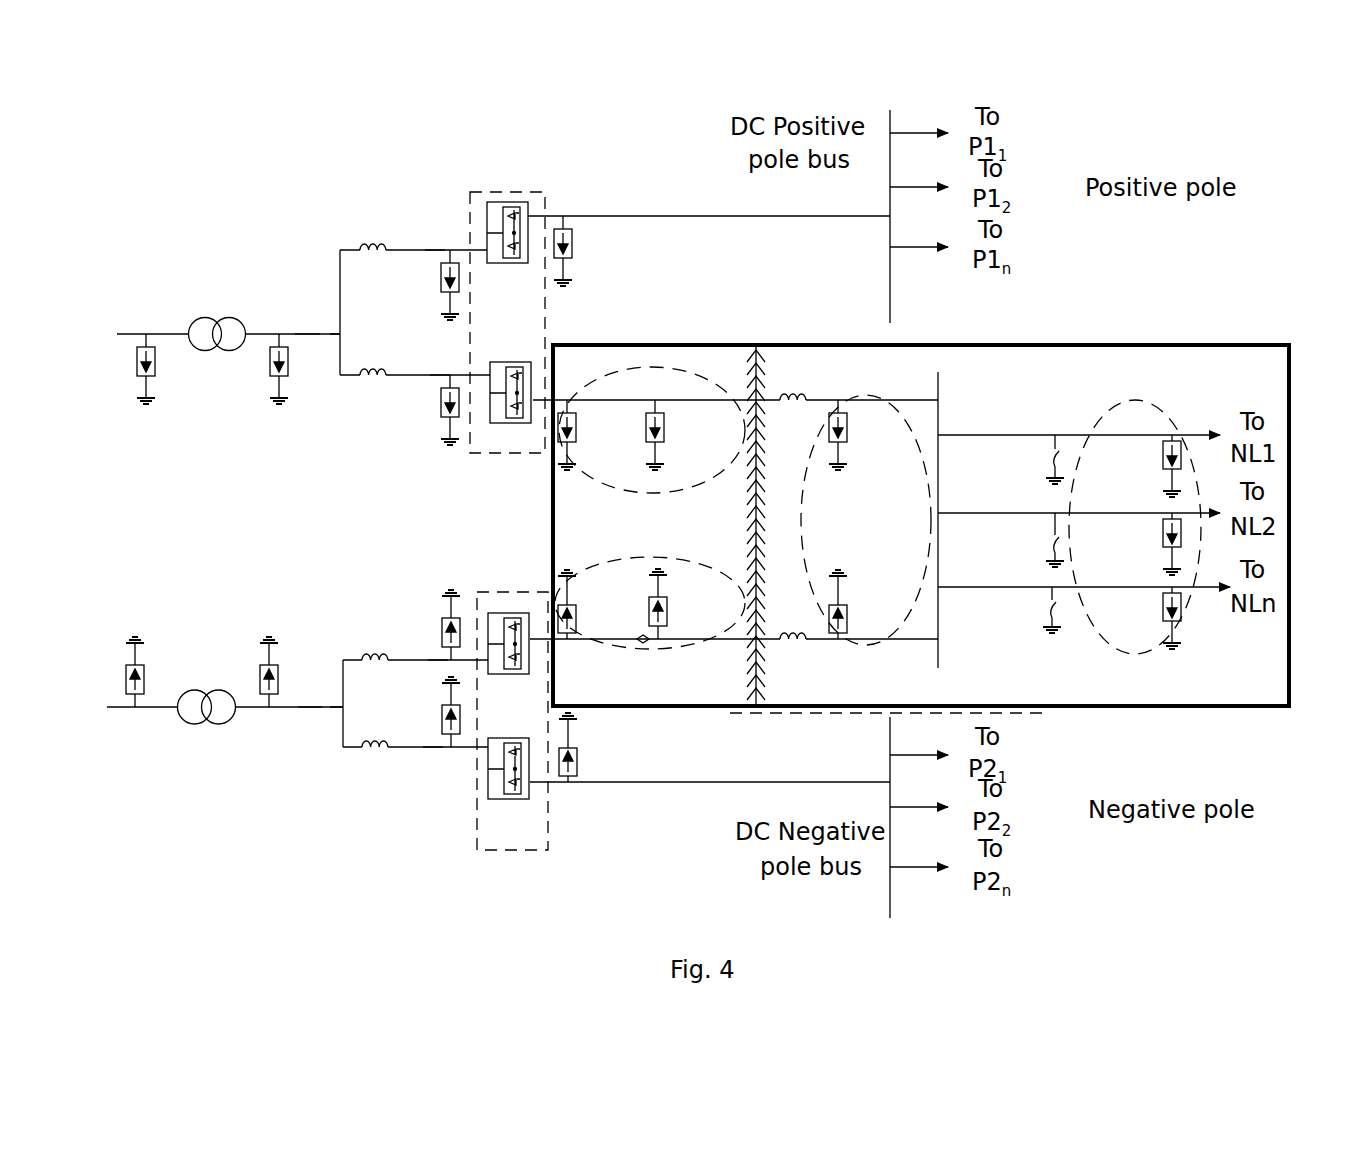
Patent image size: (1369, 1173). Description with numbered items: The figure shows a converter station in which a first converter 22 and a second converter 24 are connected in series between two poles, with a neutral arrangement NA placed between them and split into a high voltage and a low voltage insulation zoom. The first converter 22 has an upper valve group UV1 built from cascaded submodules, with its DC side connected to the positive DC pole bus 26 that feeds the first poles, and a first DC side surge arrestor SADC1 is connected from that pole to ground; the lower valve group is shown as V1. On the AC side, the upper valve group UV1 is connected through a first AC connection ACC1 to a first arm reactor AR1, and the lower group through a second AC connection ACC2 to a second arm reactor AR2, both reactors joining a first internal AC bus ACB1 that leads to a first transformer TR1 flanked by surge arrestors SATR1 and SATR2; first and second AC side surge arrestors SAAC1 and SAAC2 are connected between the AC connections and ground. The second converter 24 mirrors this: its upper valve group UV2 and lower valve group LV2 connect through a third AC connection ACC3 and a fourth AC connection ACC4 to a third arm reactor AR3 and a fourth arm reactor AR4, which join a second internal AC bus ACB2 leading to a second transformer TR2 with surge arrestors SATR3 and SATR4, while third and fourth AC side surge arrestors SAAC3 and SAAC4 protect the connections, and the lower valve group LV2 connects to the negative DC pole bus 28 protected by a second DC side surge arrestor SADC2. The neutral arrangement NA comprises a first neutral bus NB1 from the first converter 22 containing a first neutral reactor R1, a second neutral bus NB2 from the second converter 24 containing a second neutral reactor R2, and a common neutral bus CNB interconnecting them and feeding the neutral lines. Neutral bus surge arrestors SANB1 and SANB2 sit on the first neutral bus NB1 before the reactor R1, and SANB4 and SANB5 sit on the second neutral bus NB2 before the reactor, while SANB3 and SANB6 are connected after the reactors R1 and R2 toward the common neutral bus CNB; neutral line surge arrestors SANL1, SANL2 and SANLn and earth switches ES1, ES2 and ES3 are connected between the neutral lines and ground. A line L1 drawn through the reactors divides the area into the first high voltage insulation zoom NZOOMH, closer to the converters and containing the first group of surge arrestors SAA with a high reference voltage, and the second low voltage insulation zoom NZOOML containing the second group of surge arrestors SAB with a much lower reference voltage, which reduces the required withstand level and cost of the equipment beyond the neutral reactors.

The first converter 22 is at (467, 200).
The second converter 24 is at (477, 808).
The positive DC pole bus 26 is at (890, 125).
The negative DC pole bus 28 is at (890, 903).
The first transformer TR1 is at (228, 320).
The second transformer TR2 is at (225, 727).
The first internal AC bus ACB1 is at (307, 334).
The second internal AC bus ACB2 is at (310, 707).
The first AC connection ACC1 is at (435, 248).
The second AC connection ACC2 is at (440, 373).
The third AC connection ACC3 is at (438, 660).
The fourth AC connection ACC4 is at (433, 748).
The first arm reactor AR1 is at (413, 229).
The second arm reactor AR2 is at (415, 355).
The third arm reactor AR3 is at (415, 676).
The fourth arm reactor AR4 is at (413, 761).
The transformer surge arrestor SATR1 is at (105, 369).
The transformer surge arrestor SATR2 is at (242, 369).
The transformer surge arrestor SATR3 is at (93, 672).
The transformer surge arrestor SATR4 is at (235, 672).
The first AC side surge arrestor SAAC1 is at (415, 285).
The second AC side surge arrestor SAAC2 is at (415, 410).
The third AC side surge arrestor SAAC3 is at (416, 625).
The fourth AC side surge arrestor SAAC4 is at (416, 712).
The first DC side surge arrestor SADC1 is at (596, 251).
The second DC side surge arrestor SADC2 is at (604, 750).
The upper valve group UV1 is at (514, 245).
The converter V1 is at (509, 409).
The upper valve group UV2 is at (513, 666).
The lower valve group LV2 is at (510, 792).
The line L1 is at (753, 372).
The first neutral reactor R1 is at (796, 376).
The second neutral reactor R2 is at (796, 653).
The first neutral bus NB1 is at (867, 387).
The second neutral bus NB2 is at (745, 640).
The first neutral bus surge arrestor SANB1 is at (599, 435).
The second neutral bus surge arrestor SANB2 is at (688, 435).
The third neutral bus surge arrestor SANB3 is at (875, 435).
The fourth neutral bus surge arrestor SANB4 is at (599, 604).
The fifth neutral bus surge arrestor SANB5 is at (689, 604).
The sixth neutral bus surge arrestor SANB6 is at (870, 604).
The first group of surge arrestors SAA is at (596, 484).
The second group of surge arrestors SAB is at (810, 521).
The first high voltage insulation zoom NZOOMH is at (735, 544).
The second low voltage insulation zoom NZOOML is at (1150, 379).
The common neutral bus CNB is at (942, 412).
The first earth switch ES1 is at (1025, 459).
The second earth switch ES2 is at (1025, 540).
The earth switch ES3 is at (1024, 610).
The neutral line surge arrestor SANL1 is at (1133, 466).
The neutral line surge arrestor SANL2 is at (1129, 544).
The neutral line surge arrestor SANLn is at (1130, 618).
The neutral arrangement NA is at (1287, 605).